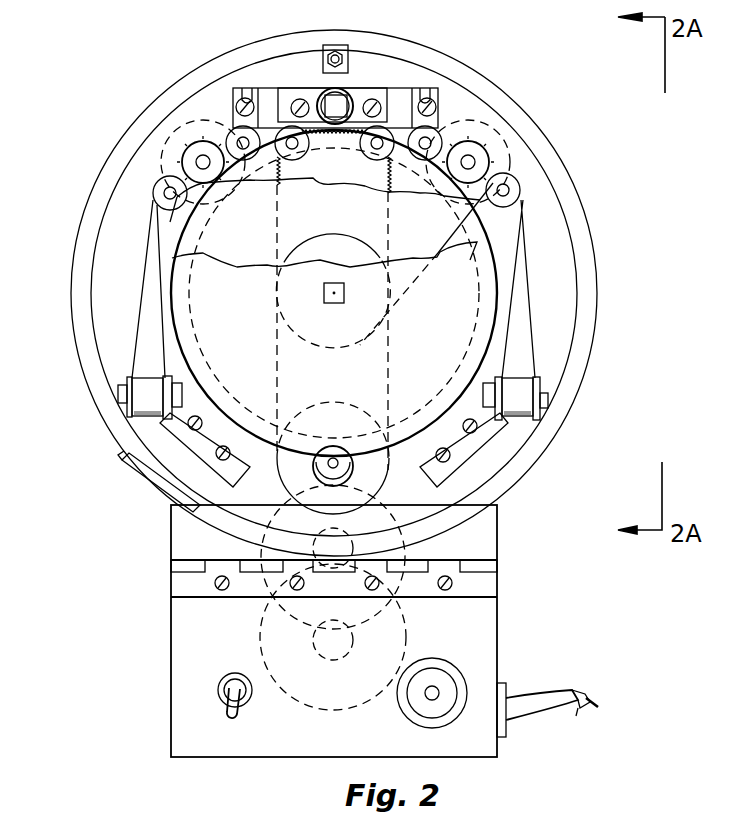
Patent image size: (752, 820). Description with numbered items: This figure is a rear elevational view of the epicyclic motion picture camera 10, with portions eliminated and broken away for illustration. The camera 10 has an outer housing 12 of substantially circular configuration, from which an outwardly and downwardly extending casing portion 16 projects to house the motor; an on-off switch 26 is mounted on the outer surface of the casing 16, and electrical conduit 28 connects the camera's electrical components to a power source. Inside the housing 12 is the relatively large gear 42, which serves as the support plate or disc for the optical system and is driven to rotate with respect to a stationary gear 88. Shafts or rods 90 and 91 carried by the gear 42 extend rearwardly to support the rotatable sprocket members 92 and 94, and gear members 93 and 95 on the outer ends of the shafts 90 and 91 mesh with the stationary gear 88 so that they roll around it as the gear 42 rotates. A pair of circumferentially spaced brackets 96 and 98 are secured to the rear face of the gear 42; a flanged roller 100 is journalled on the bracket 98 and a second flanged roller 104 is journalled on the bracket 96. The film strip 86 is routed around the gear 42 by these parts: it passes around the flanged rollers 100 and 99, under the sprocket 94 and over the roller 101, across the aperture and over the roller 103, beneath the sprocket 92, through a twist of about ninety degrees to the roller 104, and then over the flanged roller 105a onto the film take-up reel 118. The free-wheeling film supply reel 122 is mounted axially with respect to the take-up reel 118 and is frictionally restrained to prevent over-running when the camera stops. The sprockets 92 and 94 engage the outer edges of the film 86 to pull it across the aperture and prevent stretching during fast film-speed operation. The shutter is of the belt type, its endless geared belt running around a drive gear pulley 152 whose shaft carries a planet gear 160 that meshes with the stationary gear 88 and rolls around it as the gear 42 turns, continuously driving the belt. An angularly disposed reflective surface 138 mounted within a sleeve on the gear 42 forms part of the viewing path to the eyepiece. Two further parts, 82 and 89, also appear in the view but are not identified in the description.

The epicyclic motion picture camera 10 is at (155, 497).
The outer housing 12 is at (130, 472).
The casing portion 16 is at (183, 637).
The on-off switch 26 is at (232, 692).
The electrical conduit 28 is at (532, 697).
The gear 42 is at (562, 300).
The roller mounting bar 82 is at (400, 95).
The film strip 86 is at (147, 330).
The stationary gear member 88 is at (468, 338).
The film strip 89 is at (392, 227).
The shaft 90 is at (192, 165).
The shaft 91 is at (514, 177).
The sprocket member 92 is at (474, 160).
The gear member 93 is at (480, 146).
The sprocket member 94 is at (198, 158).
The gear member 95 is at (187, 122).
The bracket 96 is at (465, 455).
The bracket 98 is at (200, 448).
The flanged roller 99 is at (162, 187).
The flanged roller 100 is at (132, 413).
The roller 101 is at (240, 133).
The roller 103 is at (478, 123).
The flanged roller 104 is at (534, 418).
The flanged roller 105a is at (521, 190).
The film take-up reel 118 is at (218, 347).
The film supply reel 122 is at (185, 240).
The reflective surface 138 is at (340, 100).
The drive gear pulley 152 is at (373, 415).
The planet gear 160 is at (350, 472).